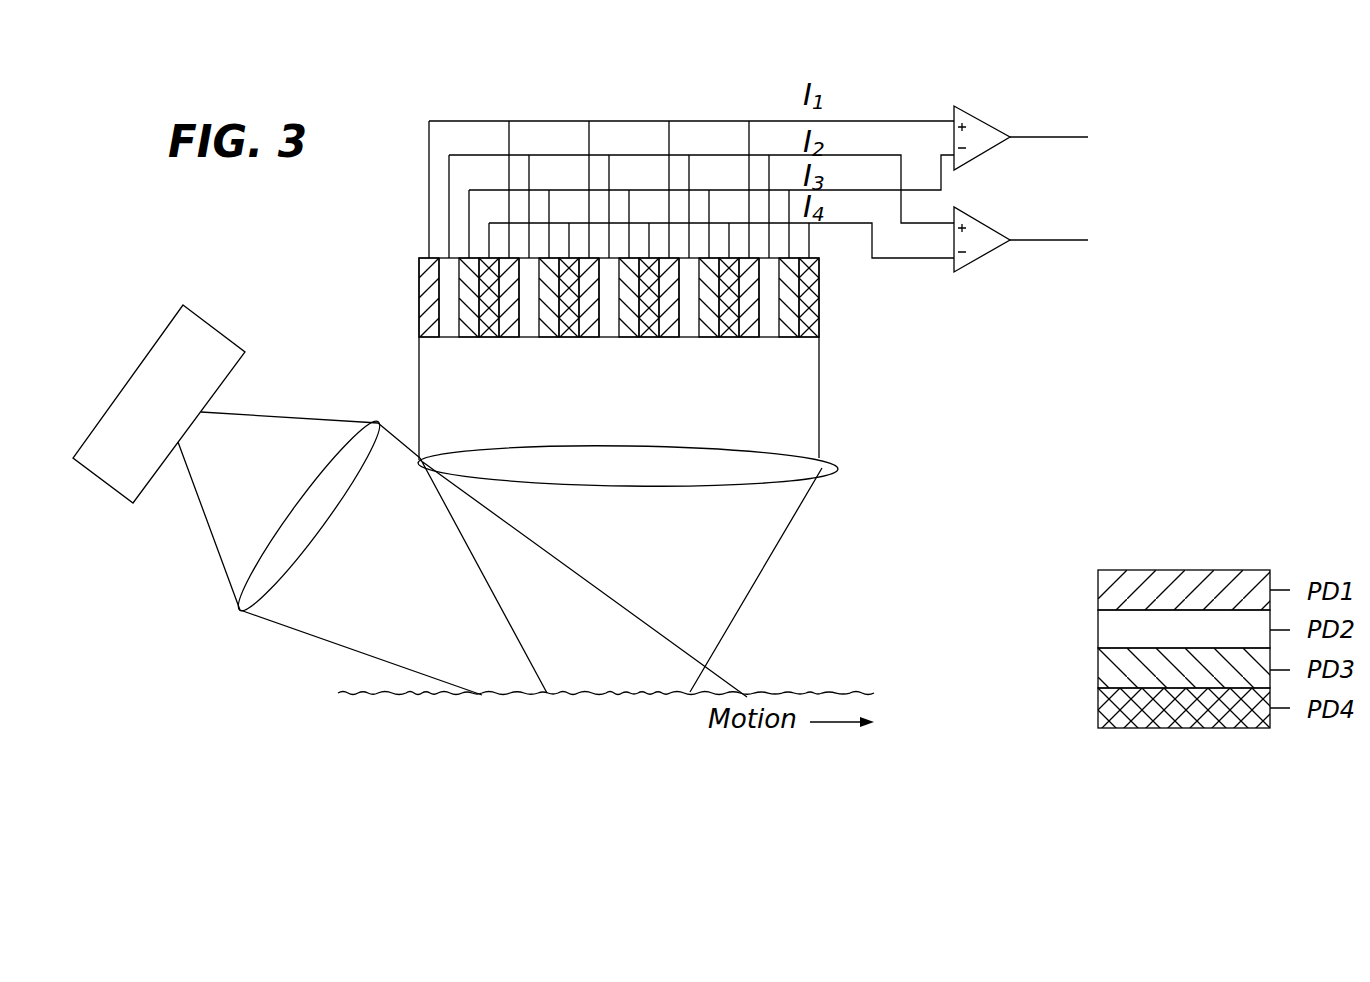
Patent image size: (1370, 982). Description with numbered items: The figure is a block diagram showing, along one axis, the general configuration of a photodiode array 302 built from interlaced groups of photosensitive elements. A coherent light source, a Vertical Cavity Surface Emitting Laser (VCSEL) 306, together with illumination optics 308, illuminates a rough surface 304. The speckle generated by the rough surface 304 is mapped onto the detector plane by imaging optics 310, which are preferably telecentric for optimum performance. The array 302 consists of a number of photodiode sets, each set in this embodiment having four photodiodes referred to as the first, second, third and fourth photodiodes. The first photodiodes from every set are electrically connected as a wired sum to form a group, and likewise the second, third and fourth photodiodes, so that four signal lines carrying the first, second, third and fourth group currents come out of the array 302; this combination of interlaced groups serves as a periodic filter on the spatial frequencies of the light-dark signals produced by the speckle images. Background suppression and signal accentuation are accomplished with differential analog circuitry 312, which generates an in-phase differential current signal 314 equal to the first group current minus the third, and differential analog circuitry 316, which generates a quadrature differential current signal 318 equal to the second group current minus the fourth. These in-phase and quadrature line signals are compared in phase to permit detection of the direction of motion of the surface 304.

The photodiode array 302 is at (419, 296).
The surface 304 is at (874, 693).
The Vertical Cavity Surface Emitting Laser (VCSEL) 306 is at (159, 404).
The illumination optics 308 is at (309, 516).
The imaging optics 310 is at (642, 482).
The differential analog circuitry 312 is at (974, 112).
The in-phase differential current signal 314 is at (1229, 167).
The differential analog circuitry 316 is at (980, 266).
The quadrature differential current signal 318 is at (1229, 262).